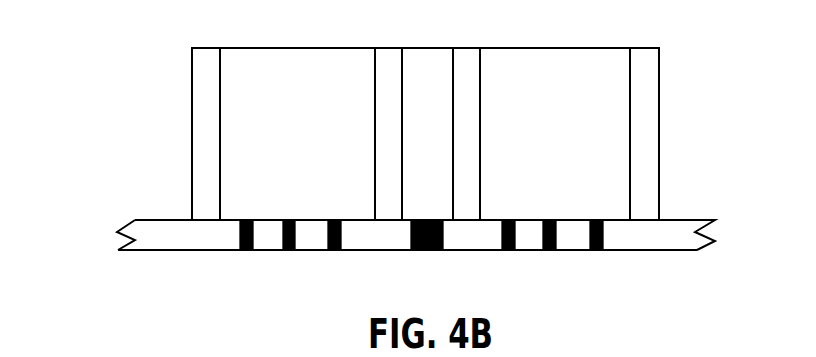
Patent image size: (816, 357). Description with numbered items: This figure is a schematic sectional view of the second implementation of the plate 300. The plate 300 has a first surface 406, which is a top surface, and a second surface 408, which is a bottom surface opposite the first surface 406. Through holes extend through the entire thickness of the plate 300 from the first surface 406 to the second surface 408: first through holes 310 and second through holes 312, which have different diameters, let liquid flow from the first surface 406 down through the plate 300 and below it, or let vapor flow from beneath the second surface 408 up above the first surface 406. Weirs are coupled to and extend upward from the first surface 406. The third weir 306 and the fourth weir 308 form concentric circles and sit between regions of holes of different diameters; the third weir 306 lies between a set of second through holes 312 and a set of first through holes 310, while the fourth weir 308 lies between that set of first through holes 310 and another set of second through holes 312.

The plate 300 is at (362, 125).
The third weir 306 is at (659, 73).
The fourth weir 308 is at (481, 88).
The first through holes 310 is at (261, 287).
The second through holes 312 is at (453, 282).
The first surface 406 is at (166, 220).
The second surface 408 is at (167, 250).